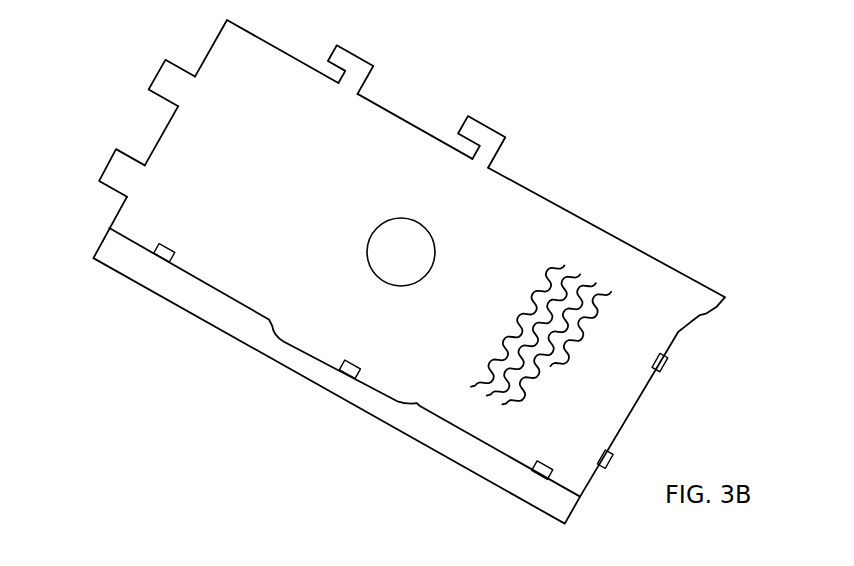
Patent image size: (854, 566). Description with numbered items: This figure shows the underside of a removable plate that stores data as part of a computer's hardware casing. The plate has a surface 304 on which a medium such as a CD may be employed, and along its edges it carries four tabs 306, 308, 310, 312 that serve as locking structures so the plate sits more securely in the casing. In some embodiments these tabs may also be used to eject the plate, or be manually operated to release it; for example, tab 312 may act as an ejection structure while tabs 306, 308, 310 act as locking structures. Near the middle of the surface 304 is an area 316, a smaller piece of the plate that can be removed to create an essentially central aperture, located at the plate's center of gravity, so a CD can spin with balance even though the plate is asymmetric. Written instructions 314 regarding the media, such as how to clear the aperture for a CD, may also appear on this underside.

The surface 304 is at (409, 278).
The tab 306 is at (105, 162).
The tab 308 is at (158, 75).
The tab 310 is at (365, 61).
The tab 312 is at (486, 127).
The written instructions 314 is at (592, 258).
The area 316 is at (401, 252).